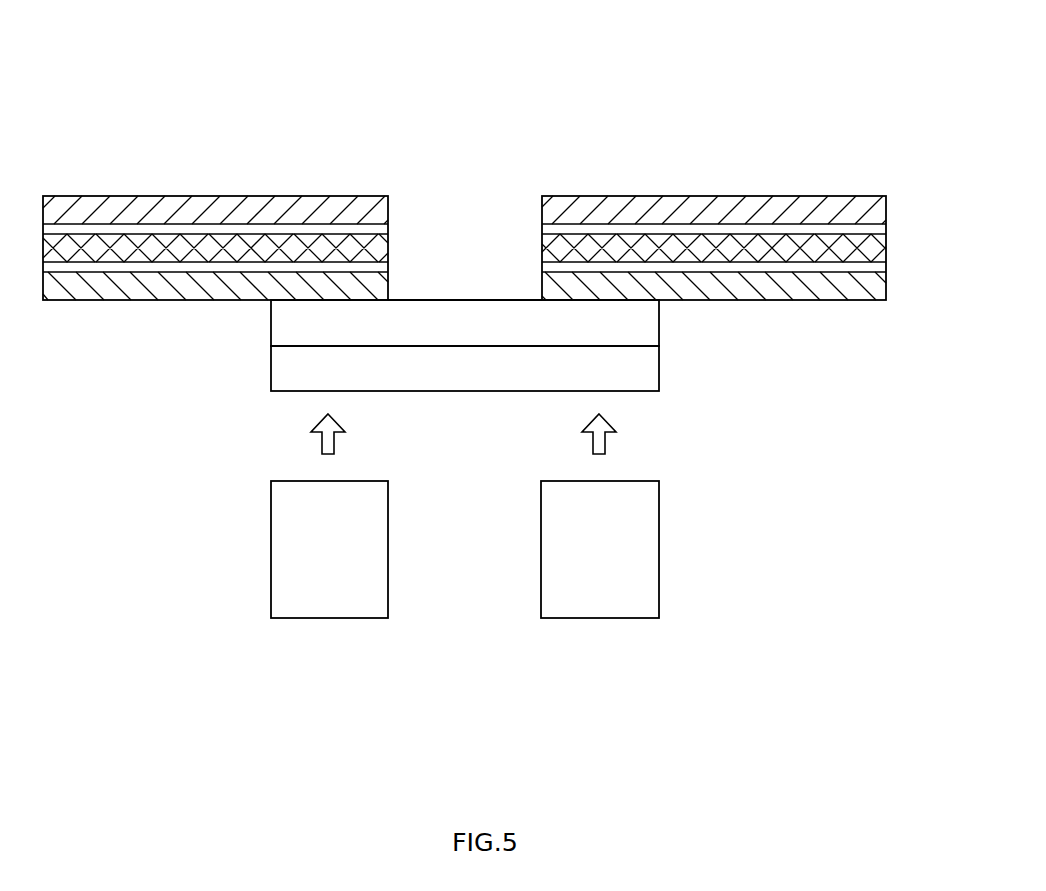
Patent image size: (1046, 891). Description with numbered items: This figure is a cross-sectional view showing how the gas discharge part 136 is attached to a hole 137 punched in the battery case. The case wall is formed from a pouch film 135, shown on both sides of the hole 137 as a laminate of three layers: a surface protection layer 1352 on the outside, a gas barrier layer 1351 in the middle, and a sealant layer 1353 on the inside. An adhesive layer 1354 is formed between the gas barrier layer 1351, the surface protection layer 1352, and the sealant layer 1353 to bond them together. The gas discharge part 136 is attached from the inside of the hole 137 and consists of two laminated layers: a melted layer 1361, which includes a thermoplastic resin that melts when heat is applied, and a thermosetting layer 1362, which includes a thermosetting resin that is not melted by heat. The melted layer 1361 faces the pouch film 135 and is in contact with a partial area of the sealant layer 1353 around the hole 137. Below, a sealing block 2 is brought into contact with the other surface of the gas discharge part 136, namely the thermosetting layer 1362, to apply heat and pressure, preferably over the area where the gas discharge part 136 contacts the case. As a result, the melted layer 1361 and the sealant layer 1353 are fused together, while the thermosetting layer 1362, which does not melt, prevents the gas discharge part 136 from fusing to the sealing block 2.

The pouch film 135 is at (501, 160).
The gas barrier layer 1351 is at (888, 247).
The surface protection layer 1352 is at (888, 207).
The sealant layer 1353 is at (888, 286).
The adhesive layer 1354 is at (826, 268).
The gas discharge part 136 is at (454, 345).
The melted layer 1361 is at (271, 322).
The thermosetting layer 1362 is at (271, 370).
The hole 137 is at (462, 240).
The sealing block 2 is at (602, 618).